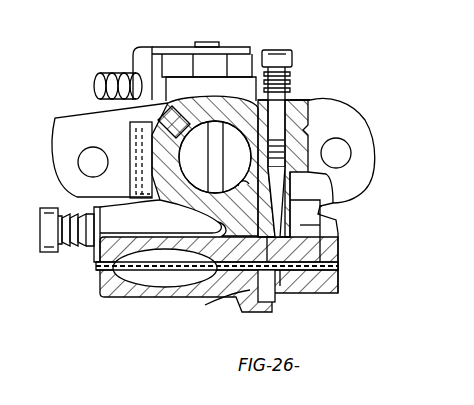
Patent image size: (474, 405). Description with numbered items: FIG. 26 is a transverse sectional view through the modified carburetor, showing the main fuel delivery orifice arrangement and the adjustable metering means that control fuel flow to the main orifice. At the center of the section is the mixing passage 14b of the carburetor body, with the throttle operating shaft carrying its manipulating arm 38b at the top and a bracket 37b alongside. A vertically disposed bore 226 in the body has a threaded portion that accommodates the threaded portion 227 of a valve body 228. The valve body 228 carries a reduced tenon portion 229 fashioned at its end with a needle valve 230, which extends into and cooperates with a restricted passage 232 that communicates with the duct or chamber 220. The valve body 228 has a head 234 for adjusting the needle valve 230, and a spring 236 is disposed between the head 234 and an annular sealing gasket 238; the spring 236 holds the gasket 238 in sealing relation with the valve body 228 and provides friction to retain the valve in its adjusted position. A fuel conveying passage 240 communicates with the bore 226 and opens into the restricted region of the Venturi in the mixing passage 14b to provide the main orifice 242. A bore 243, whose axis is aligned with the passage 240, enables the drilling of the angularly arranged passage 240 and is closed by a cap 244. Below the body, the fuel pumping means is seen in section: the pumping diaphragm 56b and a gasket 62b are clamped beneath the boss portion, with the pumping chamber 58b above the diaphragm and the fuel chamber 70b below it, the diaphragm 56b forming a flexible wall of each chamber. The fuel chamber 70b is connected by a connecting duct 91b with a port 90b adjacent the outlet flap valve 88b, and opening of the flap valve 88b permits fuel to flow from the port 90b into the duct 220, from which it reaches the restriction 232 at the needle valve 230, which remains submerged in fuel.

The mixing passage 14b is at (246, 164).
The bracket 37b is at (190, 172).
The manipulating arm 38b is at (163, 50).
The pumping diaphragm 56b is at (150, 271).
The pumping chamber 58b is at (180, 264).
The gasket 62b is at (96, 266).
The fuel chamber 70b is at (146, 272).
The outlet flap valve 88b is at (292, 278).
The port 90b is at (252, 296).
The connecting duct 91b is at (214, 296).
The duct 220 is at (312, 248).
The bore 226 is at (314, 180).
The threaded portion 227 is at (282, 146).
The valve body 228 is at (304, 104).
The reduced tenon portion 229 is at (330, 204).
The needle valve 230 is at (333, 218).
The restricted passage 232 is at (338, 233).
The head 234 is at (280, 43).
The spring 236 is at (288, 76).
The annular sealing gasket 238 is at (211, 89).
The fuel conveying passage 240 is at (228, 225).
The main orifice 242 is at (235, 199).
The bore 243 is at (174, 133).
The cap 244 is at (162, 118).